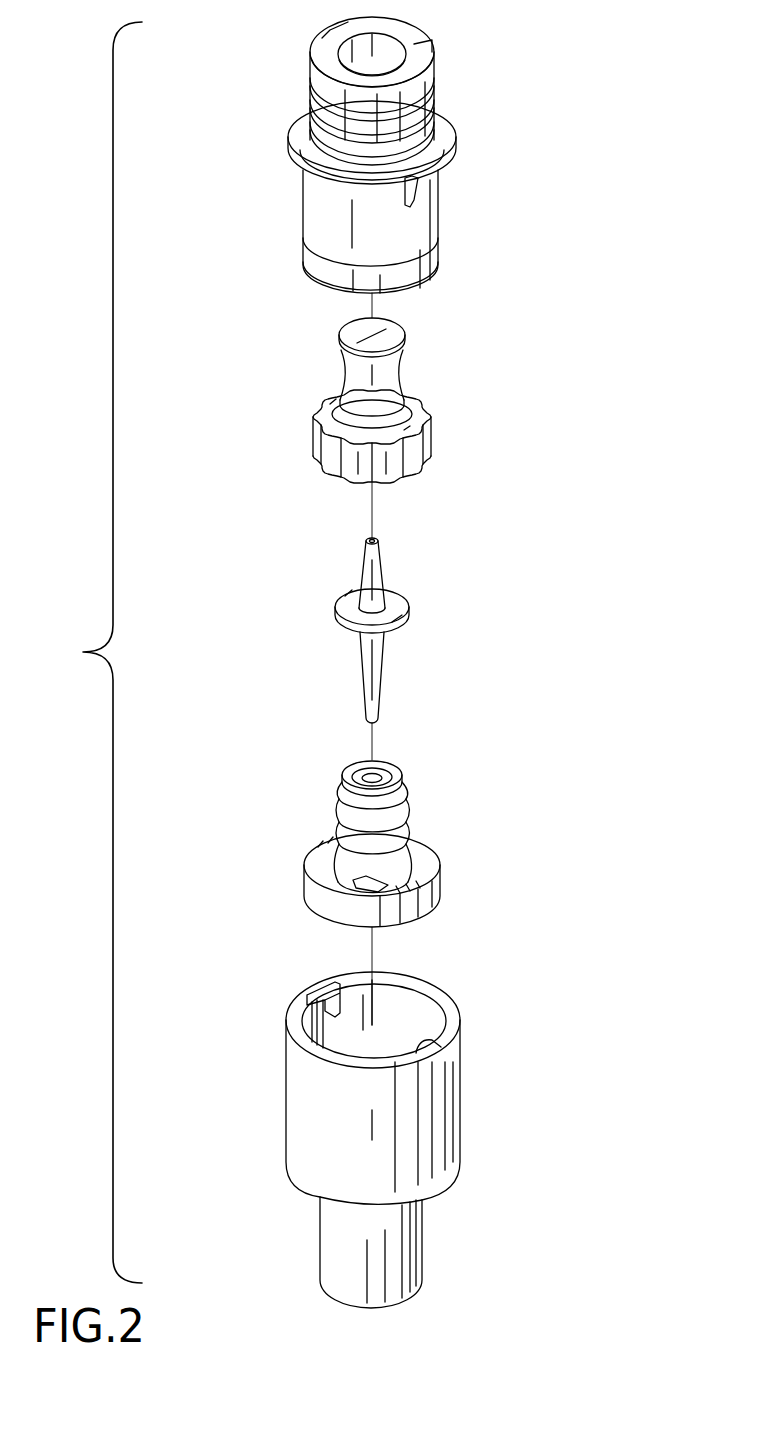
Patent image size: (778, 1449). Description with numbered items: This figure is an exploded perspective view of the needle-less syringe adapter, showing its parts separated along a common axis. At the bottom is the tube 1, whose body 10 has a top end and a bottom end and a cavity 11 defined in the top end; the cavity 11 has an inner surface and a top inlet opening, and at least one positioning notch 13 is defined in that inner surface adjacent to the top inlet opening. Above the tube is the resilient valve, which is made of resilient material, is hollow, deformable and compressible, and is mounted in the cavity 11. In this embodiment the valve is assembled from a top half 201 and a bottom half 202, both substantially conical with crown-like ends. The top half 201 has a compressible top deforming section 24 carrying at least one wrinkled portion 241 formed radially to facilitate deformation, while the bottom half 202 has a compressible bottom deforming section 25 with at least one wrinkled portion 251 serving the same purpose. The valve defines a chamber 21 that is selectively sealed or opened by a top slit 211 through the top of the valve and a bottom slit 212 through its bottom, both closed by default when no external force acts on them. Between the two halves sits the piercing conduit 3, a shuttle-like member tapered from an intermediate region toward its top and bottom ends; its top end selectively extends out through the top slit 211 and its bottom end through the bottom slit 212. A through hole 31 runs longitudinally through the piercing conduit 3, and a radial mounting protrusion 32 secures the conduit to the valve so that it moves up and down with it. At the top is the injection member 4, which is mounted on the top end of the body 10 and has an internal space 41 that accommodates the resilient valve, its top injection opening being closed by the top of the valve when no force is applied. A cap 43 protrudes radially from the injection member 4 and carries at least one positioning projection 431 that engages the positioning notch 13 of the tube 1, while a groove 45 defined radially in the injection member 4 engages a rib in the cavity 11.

The tube 1 is at (452, 1232).
The body 10 is at (458, 1143).
The cavity 11 is at (425, 1010).
The positioning notch 13 is at (325, 993).
The top half 201 is at (290, 445).
The bottom half 202 is at (452, 874).
The chamber 21 is at (382, 773).
The top slit 211 is at (355, 338).
The bottom slit 212 is at (358, 884).
The top deforming section 24 is at (397, 385).
The wrinkled portion 241 is at (340, 397).
The bottom deforming section 25 is at (410, 806).
The wrinkled portion 251 is at (342, 812).
The piercing conduit 3 is at (300, 595).
The through hole 31 is at (378, 541).
The mounting protrusion 32 is at (402, 597).
The injection member 4 is at (273, 93).
The internal space 41 is at (392, 50).
The cap 43 is at (335, 155).
The positioning projection 431 is at (425, 192).
The groove 45 is at (425, 258).